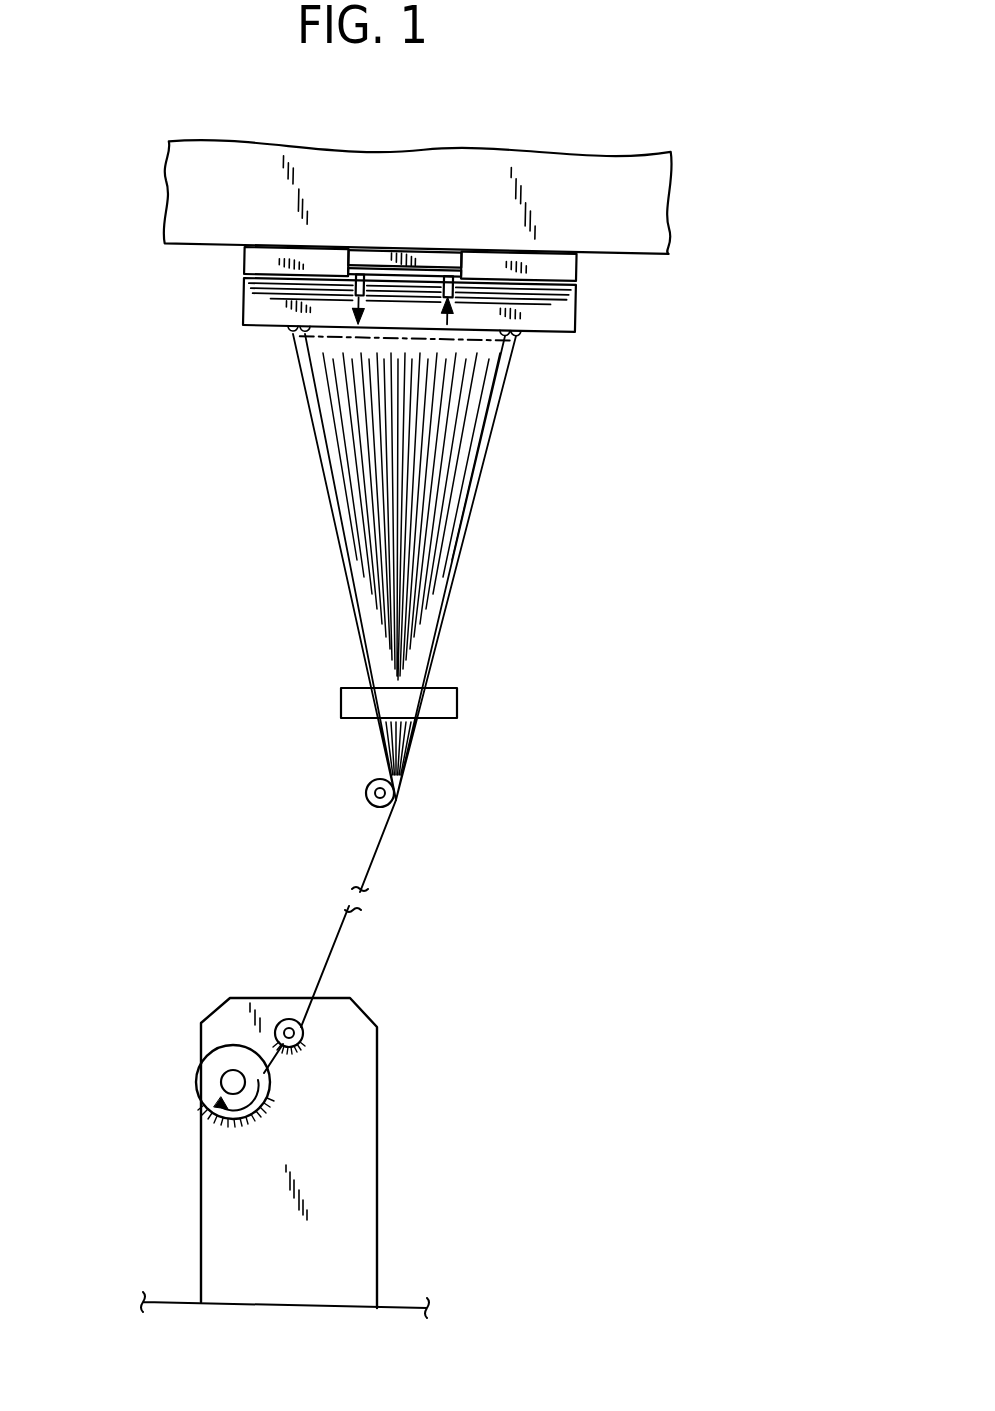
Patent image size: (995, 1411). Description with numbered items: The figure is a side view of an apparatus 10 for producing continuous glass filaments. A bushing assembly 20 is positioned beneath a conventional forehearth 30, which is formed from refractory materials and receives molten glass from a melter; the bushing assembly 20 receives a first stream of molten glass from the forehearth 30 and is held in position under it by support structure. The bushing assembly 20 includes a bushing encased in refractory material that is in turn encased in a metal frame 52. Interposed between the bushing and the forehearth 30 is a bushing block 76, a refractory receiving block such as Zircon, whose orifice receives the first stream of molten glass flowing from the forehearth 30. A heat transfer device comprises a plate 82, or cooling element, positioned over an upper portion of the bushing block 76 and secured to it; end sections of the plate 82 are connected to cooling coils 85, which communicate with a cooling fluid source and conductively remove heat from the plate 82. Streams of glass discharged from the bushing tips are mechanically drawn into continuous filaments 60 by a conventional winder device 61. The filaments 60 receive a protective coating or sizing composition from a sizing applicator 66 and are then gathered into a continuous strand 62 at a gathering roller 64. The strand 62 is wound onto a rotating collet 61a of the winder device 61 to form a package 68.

The apparatus 10 is at (611, 359).
The bushing assembly 20 is at (191, 361).
The forehearth 30 is at (637, 218).
The metal frame 52 is at (560, 312).
The continuous filaments 60 is at (465, 538).
The winder device 61 is at (286, 1097).
The rotating collet 61a is at (230, 1084).
The continuous strand 62 is at (375, 855).
The gathering roller 64 is at (366, 789).
The sizing applicator 66 is at (443, 703).
The package 68 is at (203, 1068).
The bushing block 76 is at (253, 257).
The plate 82 is at (430, 257).
The cooling coils 85 is at (462, 271).